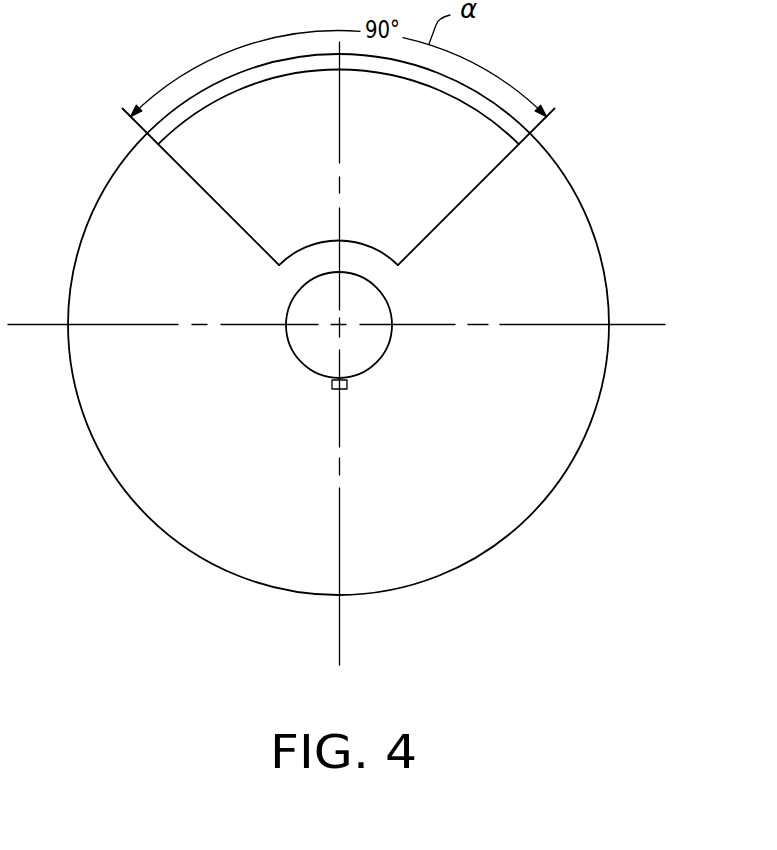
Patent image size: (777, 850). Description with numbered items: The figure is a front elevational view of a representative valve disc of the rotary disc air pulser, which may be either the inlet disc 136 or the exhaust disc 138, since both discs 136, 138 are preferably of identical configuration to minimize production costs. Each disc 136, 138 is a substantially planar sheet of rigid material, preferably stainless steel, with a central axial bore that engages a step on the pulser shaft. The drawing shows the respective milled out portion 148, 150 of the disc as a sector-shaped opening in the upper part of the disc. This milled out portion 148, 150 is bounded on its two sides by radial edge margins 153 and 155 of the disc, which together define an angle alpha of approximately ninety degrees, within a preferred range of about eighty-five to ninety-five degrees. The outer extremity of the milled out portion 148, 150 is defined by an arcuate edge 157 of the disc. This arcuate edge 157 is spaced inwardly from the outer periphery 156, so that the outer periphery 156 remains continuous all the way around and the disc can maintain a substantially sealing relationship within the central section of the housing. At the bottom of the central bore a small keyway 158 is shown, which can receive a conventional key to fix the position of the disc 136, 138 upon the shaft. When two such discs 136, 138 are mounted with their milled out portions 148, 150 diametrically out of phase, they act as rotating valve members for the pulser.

The inlet disc 136 is at (360, 353).
The exhaust disc 138 is at (360, 353).
The milled out portion 148 is at (339, 168).
The milled out portion 150 is at (339, 187).
The radial edge margin 153 is at (253, 238).
The radial edge margin 155 is at (455, 143).
The outer periphery 156 is at (585, 212).
The arcuate edge 157 is at (250, 85).
The keyway 158 is at (348, 386).